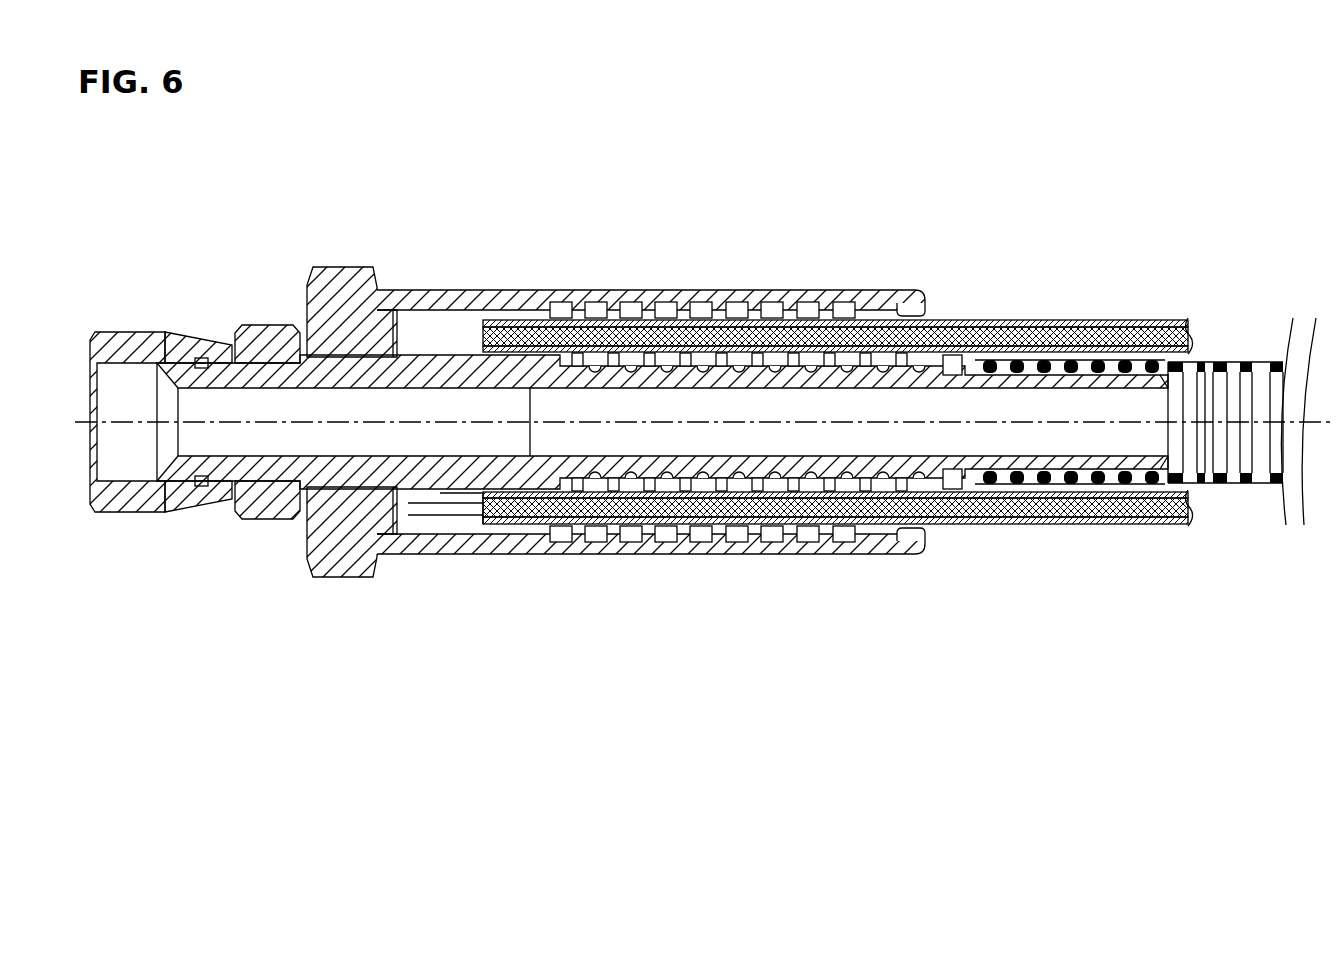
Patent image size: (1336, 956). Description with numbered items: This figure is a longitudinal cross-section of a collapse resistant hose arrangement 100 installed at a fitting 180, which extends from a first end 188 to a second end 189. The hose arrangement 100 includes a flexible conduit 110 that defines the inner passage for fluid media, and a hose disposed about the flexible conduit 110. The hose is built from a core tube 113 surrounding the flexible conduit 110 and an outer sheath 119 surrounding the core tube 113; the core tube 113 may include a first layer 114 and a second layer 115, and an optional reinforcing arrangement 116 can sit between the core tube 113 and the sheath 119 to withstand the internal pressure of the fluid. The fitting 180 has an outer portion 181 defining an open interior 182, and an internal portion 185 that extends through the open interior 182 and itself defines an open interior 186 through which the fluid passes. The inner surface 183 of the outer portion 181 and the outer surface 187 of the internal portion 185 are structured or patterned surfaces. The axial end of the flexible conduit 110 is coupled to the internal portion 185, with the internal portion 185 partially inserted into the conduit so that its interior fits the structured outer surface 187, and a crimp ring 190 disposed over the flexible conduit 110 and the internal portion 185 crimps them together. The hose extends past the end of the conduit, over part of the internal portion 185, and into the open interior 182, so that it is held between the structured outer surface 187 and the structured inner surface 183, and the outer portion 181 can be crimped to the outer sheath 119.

The hose arrangement 100 is at (950, 542).
The flexible conduit 110 is at (1269, 352).
The core tube 113 is at (450, 503).
The first layer 114 is at (1033, 500).
The second layer 115 is at (1052, 524).
The reinforcing arrangement 116 is at (423, 515).
The outer sheath 119 is at (498, 527).
The fitting 180 is at (416, 566).
The outer portion 181 is at (722, 291).
The open interior 182 is at (926, 306).
The inner surface 183 is at (590, 316).
The internal portion 185 is at (440, 354).
The open interior 186 is at (767, 387).
The outer surface 187 is at (847, 362).
The first end 188 is at (158, 482).
The second end 189 is at (1193, 483).
The crimp ring 190 is at (1048, 360).